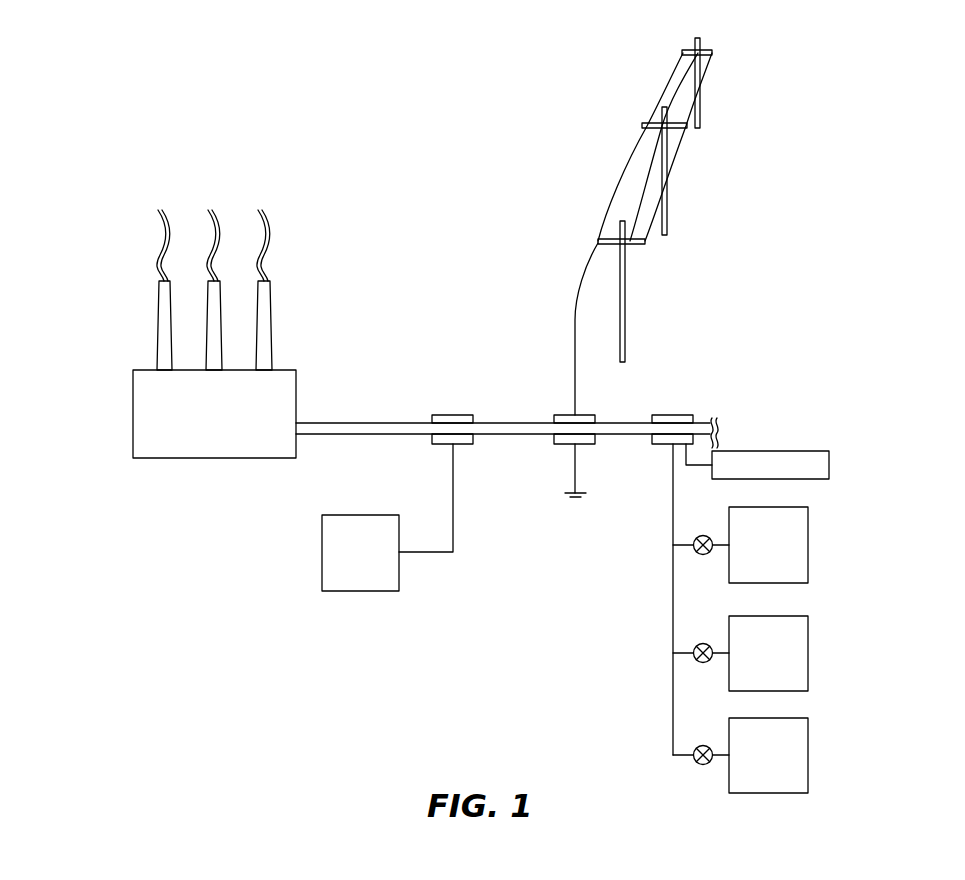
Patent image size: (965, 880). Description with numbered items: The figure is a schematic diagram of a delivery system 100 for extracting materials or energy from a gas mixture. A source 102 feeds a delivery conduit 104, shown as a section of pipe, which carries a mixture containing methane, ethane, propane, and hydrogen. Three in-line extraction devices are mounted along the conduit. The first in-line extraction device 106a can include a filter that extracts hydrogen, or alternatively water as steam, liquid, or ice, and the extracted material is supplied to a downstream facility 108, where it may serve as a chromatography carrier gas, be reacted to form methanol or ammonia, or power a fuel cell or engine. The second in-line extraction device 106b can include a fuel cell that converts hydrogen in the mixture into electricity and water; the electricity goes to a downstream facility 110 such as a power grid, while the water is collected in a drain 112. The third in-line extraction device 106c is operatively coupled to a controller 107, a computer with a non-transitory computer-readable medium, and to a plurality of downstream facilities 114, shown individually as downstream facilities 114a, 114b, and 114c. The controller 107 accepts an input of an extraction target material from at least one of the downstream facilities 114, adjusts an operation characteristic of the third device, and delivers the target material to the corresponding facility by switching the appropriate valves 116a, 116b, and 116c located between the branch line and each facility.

The delivery system 100 is at (825, 243).
The source 102 is at (175, 458).
The delivery conduit 104 is at (337, 423).
The first in-line extraction device 106a is at (441, 415).
The second in-line extraction device 106b is at (562, 415).
The third in-line extraction device 106c is at (667, 415).
The controller 107 is at (804, 451).
The downstream facility 108 is at (352, 515).
The downstream facility 110 is at (650, 93).
The drain 112 is at (560, 524).
The downstream facilities 114 is at (872, 578).
The downstream facility 114a is at (808, 545).
The downstream facility 114b is at (808, 653).
The downstream facility 114c is at (808, 755).
The valve 116a is at (703, 555).
The valve 116b is at (703, 663).
The valve 116c is at (703, 765).